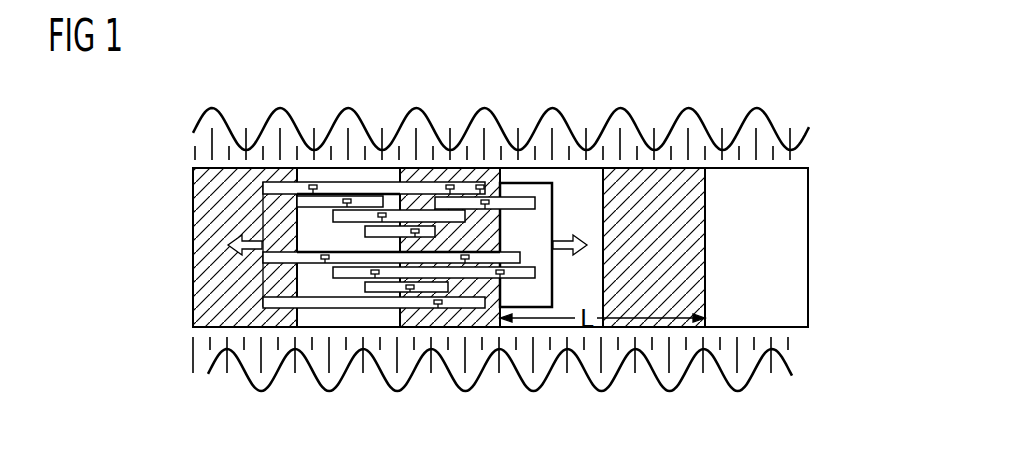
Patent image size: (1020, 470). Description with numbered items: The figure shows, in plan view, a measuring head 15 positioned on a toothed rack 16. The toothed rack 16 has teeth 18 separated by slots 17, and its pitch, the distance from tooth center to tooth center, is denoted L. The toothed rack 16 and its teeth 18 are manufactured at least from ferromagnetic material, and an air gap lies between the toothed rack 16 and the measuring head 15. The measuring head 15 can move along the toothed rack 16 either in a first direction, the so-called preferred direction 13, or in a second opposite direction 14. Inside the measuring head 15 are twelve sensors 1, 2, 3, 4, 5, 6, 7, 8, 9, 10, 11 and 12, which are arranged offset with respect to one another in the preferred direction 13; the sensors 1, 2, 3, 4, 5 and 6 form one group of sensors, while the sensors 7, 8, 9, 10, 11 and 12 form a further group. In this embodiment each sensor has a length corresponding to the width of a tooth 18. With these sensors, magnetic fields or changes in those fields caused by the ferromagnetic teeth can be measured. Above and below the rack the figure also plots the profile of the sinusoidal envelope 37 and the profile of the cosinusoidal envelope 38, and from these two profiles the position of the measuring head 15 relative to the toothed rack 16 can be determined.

The sensor 1 is at (341, 183).
The sensor 2 is at (322, 198).
The sensor 3 is at (366, 224).
The sensor 4 is at (378, 232).
The sensor 5 is at (487, 176).
The sensor 6 is at (464, 206).
The sensor 7 is at (302, 258).
The sensor 8 is at (338, 268).
The sensor 9 is at (400, 303).
The sensor 10 is at (457, 306).
The sensor 11 is at (494, 212).
The sensor 12 is at (514, 270).
The preferred direction 13 is at (560, 250).
The second opposite direction 14 is at (246, 255).
The measuring head 15 is at (553, 198).
The toothed rack 16 is at (826, 220).
The slot 17 is at (808, 285).
The tooth 18 is at (705, 284).
The sinusoidal envelope 37 is at (484, 107).
The cosinusoidal envelope 38 is at (470, 392).